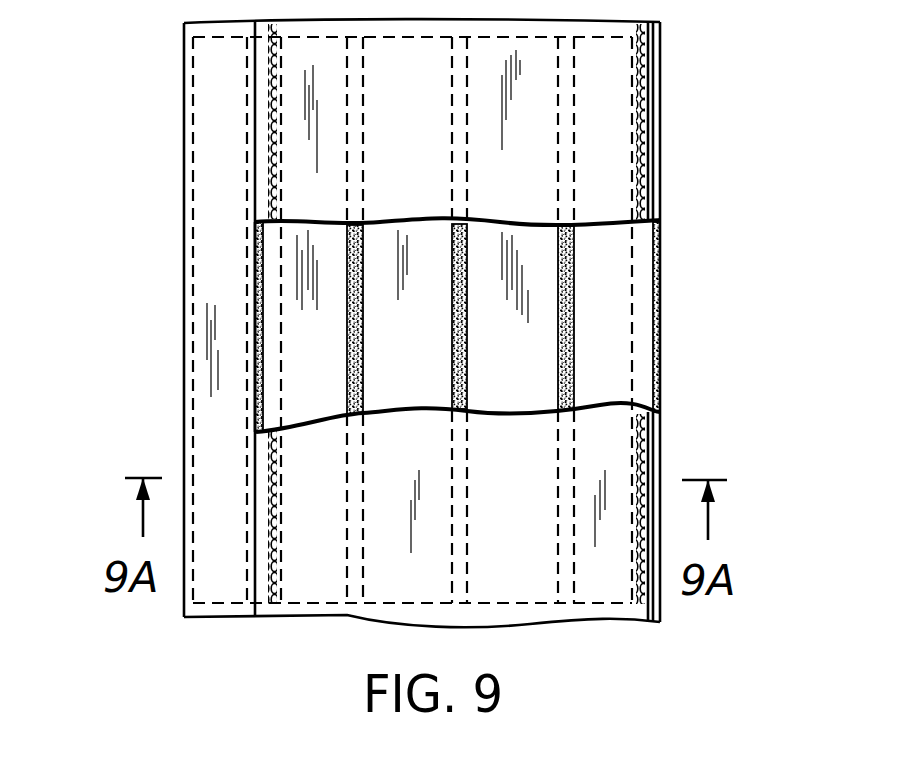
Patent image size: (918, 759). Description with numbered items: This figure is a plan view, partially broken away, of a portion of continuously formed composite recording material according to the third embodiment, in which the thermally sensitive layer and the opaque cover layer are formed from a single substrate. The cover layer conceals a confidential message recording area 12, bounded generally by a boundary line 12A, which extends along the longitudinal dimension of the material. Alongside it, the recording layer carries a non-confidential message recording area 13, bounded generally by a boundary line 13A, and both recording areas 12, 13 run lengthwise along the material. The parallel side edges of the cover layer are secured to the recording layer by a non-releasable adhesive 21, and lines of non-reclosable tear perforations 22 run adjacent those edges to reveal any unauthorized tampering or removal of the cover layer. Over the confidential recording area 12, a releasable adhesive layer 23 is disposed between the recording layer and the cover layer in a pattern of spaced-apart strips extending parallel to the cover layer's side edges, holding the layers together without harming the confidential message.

The confidential message recording area 12 is at (378, 347).
The boundary line 12A is at (632, 292).
The non-confidential message recording area 13 is at (205, 185).
The boundary line 13A is at (193, 137).
The non-releasable adhesive 21 is at (253, 263).
The lines of non-reclosable tear perforations 22 is at (272, 97).
The releasable adhesive layer 23 is at (347, 292).